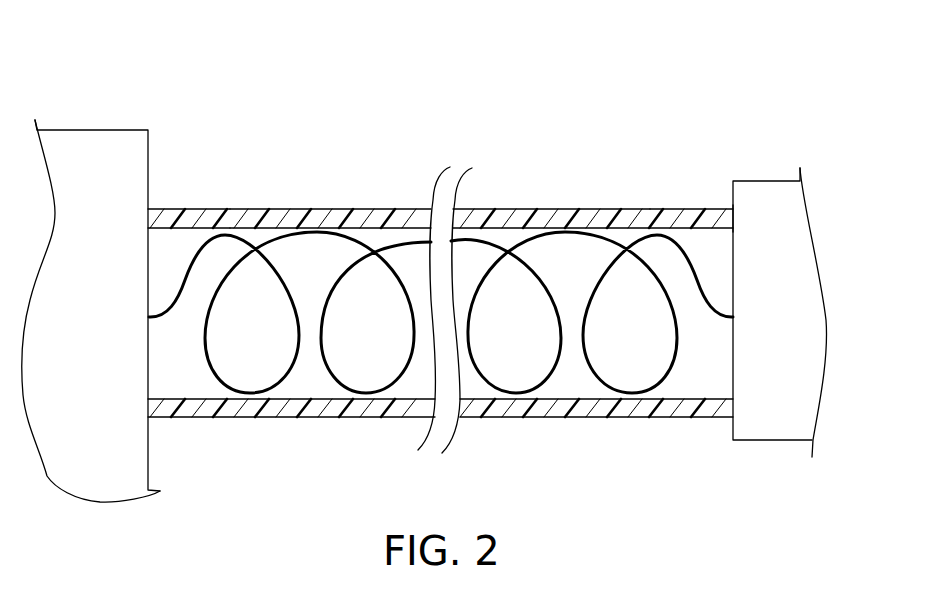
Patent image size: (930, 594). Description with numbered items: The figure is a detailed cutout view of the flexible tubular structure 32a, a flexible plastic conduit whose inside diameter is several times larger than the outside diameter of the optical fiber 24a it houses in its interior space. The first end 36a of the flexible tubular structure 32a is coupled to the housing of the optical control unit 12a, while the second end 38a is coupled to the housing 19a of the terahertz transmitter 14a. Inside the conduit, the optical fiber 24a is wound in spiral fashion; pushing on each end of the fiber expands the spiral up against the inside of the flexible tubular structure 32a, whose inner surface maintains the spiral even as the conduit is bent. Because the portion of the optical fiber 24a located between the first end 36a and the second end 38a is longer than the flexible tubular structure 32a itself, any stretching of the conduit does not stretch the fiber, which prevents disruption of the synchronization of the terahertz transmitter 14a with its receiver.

The optical control unit 12a is at (72, 128).
The terahertz transmitter 14a is at (760, 180).
The housing of the terahertz transmitter 19a is at (732, 203).
The optical fiber 24a is at (302, 232).
The flexible tubular structure 32a is at (383, 208).
The first end 36a is at (176, 209).
The second end 38a is at (695, 208).